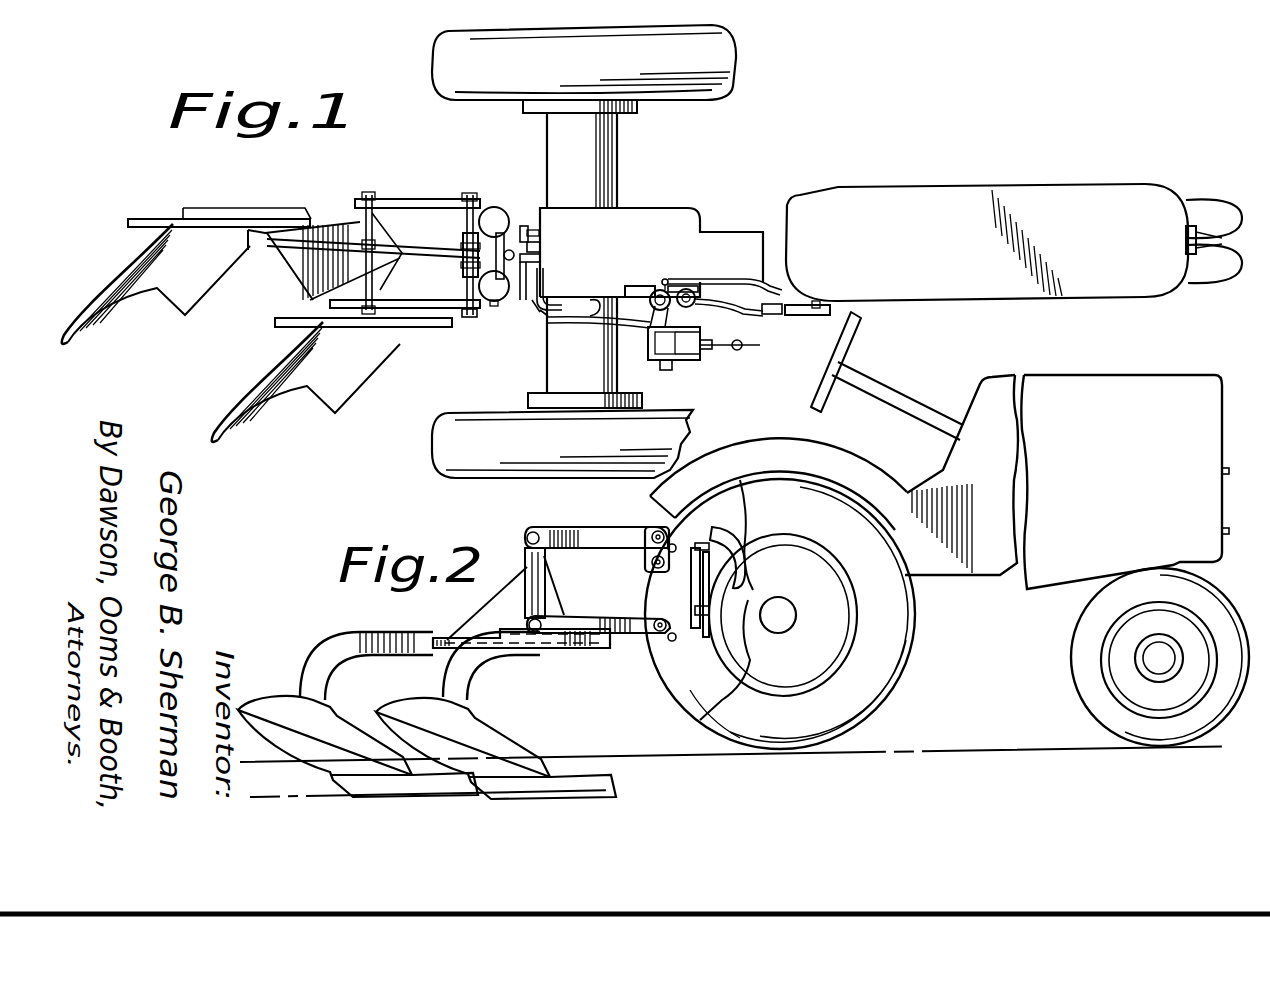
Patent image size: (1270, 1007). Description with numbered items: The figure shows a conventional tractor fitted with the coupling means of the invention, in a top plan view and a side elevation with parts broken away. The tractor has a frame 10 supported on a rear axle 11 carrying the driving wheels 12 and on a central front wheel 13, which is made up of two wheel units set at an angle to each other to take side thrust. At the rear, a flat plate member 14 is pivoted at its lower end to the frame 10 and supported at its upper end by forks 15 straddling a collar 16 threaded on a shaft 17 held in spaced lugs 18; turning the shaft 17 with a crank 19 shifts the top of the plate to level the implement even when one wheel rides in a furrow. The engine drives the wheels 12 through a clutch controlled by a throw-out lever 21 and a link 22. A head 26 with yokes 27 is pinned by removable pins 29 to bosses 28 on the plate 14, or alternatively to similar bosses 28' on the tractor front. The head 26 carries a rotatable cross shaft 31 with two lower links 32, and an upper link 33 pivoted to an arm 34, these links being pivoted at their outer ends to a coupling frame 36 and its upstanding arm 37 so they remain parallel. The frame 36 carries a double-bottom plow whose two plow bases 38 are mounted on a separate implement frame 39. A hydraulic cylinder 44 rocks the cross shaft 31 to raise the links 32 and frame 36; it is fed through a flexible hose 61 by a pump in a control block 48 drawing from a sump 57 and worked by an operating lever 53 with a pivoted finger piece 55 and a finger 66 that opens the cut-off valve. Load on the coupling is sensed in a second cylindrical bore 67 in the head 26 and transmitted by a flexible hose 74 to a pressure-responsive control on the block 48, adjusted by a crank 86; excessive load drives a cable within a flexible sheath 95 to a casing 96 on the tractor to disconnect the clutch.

In FIG. 1, the frame 10 is at (741, 236).
In FIG. 2, the frame 10 is at (946, 565).
In FIG. 1, the rear axle 11 is at (602, 165).
In FIG. 1, the driving wheels 12 is at (705, 96).
In FIG. 2, the driving wheels 12 is at (895, 665).
In FIG. 1, the central front wheel 13 is at (1200, 207).
In FIG. 2, the central front wheel 13 is at (1072, 665).
In FIG. 2, the flat plate member 14 is at (720, 665).
In FIG. 1, the forks 15 is at (541, 237).
In FIG. 1, the collar 16 is at (541, 249).
In FIG. 1, the shaft 17 is at (541, 266).
In FIG. 1, the lugs 18 is at (556, 291).
In FIG. 1, the crank 19 is at (541, 313).
In FIG. 1, the throw-out lever 21 is at (666, 279).
In FIG. 1, the link 22 is at (712, 279).
In FIG. 1, the head 26 is at (503, 238).
In FIG. 2, the head 26 is at (660, 582).
In FIG. 1, the yokes 27 is at (511, 250).
In FIG. 2, the yokes 27 is at (676, 546).
In FIG. 2, the bosses 28 is at (724, 582).
In FIG. 1, the bosses 28' is at (1206, 252).
In FIG. 2, the bosses 28' is at (1207, 501).
In FIG. 1, the removable pins 29 is at (494, 300).
In FIG. 2, the removable pins 29 is at (704, 543).
In FIG. 1, the cross shaft 31 is at (472, 317).
In FIG. 2, the cross shaft 31 is at (655, 632).
In FIG. 1, the lower links 32 is at (436, 200).
In FIG. 2, the lower links 32 is at (618, 617).
In FIG. 1, the upper link 33 is at (432, 248).
In FIG. 2, the upper link 33 is at (582, 528).
In FIG. 1, the arm 34 is at (462, 262).
In FIG. 2, the arm 34 is at (652, 549).
In FIG. 1, the frame 36 is at (340, 212).
In FIG. 2, the frame 36 is at (478, 630).
In FIG. 2, the upstanding arm 37 is at (525, 567).
In FIG. 1, the plow bases 38 is at (137, 260).
In FIG. 2, the plow bases 38 is at (397, 710).
In FIG. 1, the implement frame 39 is at (281, 216).
In FIG. 2, the implement frame 39 is at (452, 668).
In FIG. 1, the cylinder 44 is at (494, 208).
In FIG. 1, the control block 48 is at (684, 285).
In FIG. 1, the operating lever 53 is at (715, 350).
In FIG. 1, the finger piece 55 is at (745, 346).
In FIG. 1, the sump 57 is at (740, 298).
In FIG. 1, the flexible hose 61 is at (594, 322).
In FIG. 1, the finger 66 is at (702, 335).
In FIG. 1, the second cylindrical bore 67 is at (494, 306).
In FIG. 1, the flexible hose 74 is at (585, 324).
In FIG. 1, the crank 86 is at (650, 286).
In FIG. 1, the flexible sheath 95 is at (760, 312).
In FIG. 1, the casing 96 is at (800, 319).